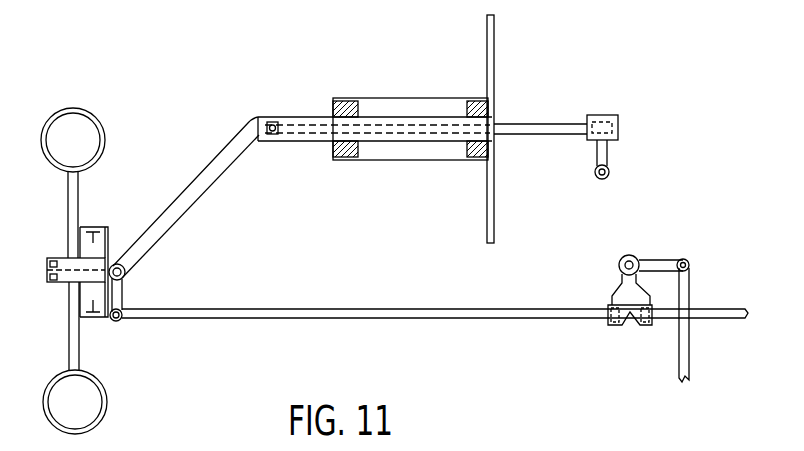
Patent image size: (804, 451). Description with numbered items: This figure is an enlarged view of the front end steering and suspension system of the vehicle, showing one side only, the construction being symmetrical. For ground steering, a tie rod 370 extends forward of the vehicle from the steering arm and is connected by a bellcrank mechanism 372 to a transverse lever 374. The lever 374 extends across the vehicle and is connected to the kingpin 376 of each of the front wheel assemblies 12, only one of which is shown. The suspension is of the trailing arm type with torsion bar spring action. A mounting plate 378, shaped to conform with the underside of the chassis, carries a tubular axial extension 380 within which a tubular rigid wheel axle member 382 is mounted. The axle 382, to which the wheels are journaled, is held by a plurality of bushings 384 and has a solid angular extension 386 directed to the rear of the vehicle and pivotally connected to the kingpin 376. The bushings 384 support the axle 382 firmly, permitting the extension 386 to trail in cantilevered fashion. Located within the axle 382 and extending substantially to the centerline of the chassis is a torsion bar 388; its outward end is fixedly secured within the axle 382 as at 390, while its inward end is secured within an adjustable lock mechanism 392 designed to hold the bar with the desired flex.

The front wheel assembly 12 is at (110, 403).
The tie rod 370 is at (692, 362).
The bellcrank mechanism 372 is at (657, 261).
The transverse lever 374 is at (555, 320).
The kingpin 376 is at (125, 275).
The mounting plate 378 is at (495, 224).
The tubular axial extension 380 is at (430, 161).
The tubular rigid wheel axle member 382 is at (291, 116).
The bushings 384 is at (338, 158).
The solid angular extension 386 is at (186, 197).
The torsion bar 388 is at (518, 124).
The outward end fixing 390 is at (270, 121).
The adjustable lock mechanism 392 is at (603, 115).